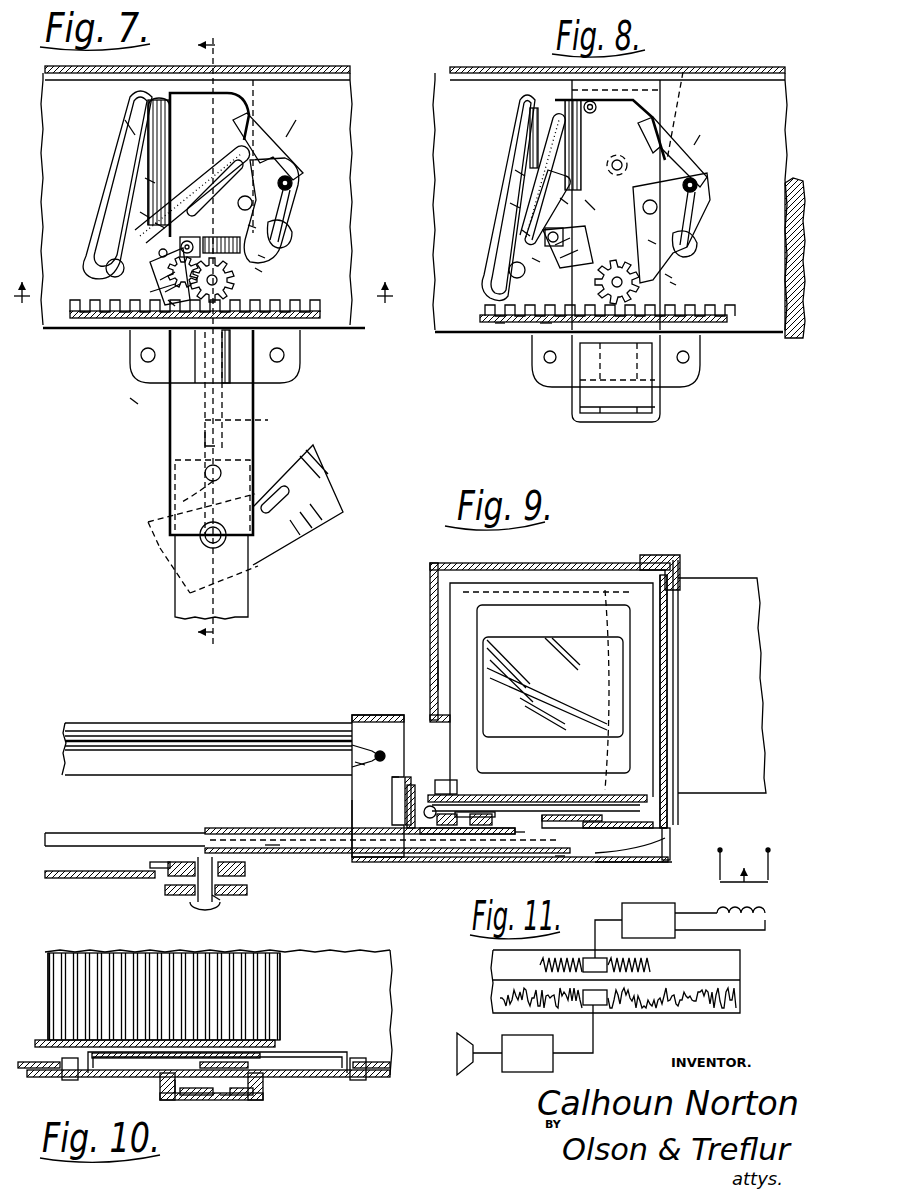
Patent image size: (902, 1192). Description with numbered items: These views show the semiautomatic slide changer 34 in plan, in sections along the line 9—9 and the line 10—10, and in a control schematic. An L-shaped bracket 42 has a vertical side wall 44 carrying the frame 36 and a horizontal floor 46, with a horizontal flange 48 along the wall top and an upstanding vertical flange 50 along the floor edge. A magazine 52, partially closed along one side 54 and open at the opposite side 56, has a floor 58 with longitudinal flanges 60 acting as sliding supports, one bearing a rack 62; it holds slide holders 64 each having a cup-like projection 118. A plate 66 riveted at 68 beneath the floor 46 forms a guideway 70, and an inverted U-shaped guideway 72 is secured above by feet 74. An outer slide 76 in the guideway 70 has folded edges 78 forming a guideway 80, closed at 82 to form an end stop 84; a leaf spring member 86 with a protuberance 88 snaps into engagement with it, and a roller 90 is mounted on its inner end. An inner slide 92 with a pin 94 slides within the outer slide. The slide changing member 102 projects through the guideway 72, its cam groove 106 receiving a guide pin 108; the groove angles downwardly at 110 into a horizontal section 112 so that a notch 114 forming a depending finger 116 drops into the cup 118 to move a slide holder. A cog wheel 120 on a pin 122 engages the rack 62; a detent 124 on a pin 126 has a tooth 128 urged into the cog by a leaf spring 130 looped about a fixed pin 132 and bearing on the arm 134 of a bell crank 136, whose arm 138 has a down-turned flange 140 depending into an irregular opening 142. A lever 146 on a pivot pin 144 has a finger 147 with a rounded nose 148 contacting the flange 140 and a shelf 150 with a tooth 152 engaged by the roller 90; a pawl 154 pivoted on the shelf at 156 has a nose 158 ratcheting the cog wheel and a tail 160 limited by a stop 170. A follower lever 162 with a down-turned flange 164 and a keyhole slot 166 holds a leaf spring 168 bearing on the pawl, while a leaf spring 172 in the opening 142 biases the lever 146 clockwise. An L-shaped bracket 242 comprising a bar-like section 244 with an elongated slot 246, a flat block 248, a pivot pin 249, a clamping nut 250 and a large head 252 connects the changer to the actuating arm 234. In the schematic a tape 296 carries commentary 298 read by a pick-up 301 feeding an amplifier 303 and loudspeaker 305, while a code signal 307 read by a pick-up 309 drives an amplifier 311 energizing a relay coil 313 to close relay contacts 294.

In FIG. 7, the section line 9— 9 is at (224, 339).
In FIG. 7, the section line 10— 10 is at (206, 310).
In FIG. 7, the semiautomatic changer 34 is at (136, 386).
In FIG. 8, the semiautomatic changer 34 is at (504, 353).
In FIG. 9, the frame 36 is at (746, 590).
In FIG. 9, the L-shaped bracket 42 is at (656, 552).
In FIG. 9, the vertical side wall 44 is at (668, 578).
In FIG. 7, the horizontal floor 46 is at (340, 105).
In FIG. 8, the horizontal floor 46 is at (773, 108).
In FIG. 9, the horizontal floor 46 is at (606, 828).
In FIG. 10, the horizontal floor 46 is at (385, 1078).
In FIG. 9, the horizontal flange 48 is at (640, 566).
In FIG. 9, the upstanding vertical flange 50 is at (414, 808).
In FIG. 9, the magazine 52 is at (428, 641).
In FIG. 9, the partially closed side 54 is at (430, 676).
In FIG. 9, the open side 56 is at (657, 660).
In FIG. 9, the magazine floor 58 is at (530, 797).
In FIG. 9, the longitudinal flanges 60 is at (652, 804).
In FIG. 7, the rack 62 is at (290, 302).
In FIG. 8, the rack 62 is at (690, 314).
In FIG. 9, the rack 62 is at (595, 690).
In FIG. 9, the slide holders 64 is at (470, 600).
In FIG. 10, the slide holders 64 is at (205, 953).
In FIG. 7, the plate 66 is at (150, 157).
In FIG. 8, the plate 66 is at (535, 137).
In FIG. 10, the plate 66 is at (295, 1078).
In FIG. 10, the rivets 68 is at (68, 1081).
In FIG. 7, the guideway 70 is at (133, 402).
In FIG. 9, the guideway 70 is at (561, 858).
In FIG. 10, the guideway 70 is at (213, 1101).
In FIG. 7, the inverted U-shaped guideway 72 is at (235, 370).
In FIG. 9, the inverted U-shaped guideway 72 is at (350, 812).
In FIG. 7, the feet 74 is at (298, 358).
In FIG. 8, the feet 74 is at (703, 357).
In FIG. 7, the outer slide 76 is at (242, 448).
In FIG. 9, the outer slide 76 is at (331, 856).
In FIG. 10, the outer slide 76 is at (257, 1101).
In FIG. 7, the folded-over edges 78 is at (254, 419).
In FIG. 10, the folded-over edges 78 is at (190, 1101).
In FIG. 7, the guideway 80 is at (205, 437).
In FIG. 10, the guideway 80 is at (225, 1101).
In FIG. 7, the closed edge portion 82 is at (178, 510).
In FIG. 7, the end stop 84 is at (180, 496).
In FIG. 9, the leaf spring member 86 is at (672, 861).
In FIG. 9, the protuberance 88 is at (672, 843).
In FIG. 7, the roller 90 is at (170, 306).
In FIG. 8, the roller 90 is at (594, 103).
In FIG. 9, the roller 90 is at (520, 835).
In FIG. 7, the inner slide 92 is at (237, 592).
In FIG. 9, the inner slide 92 is at (57, 833).
In FIG. 7, the pin 94 is at (205, 474).
In FIG. 9, the pin 94 is at (273, 848).
In FIG. 9, the slide changing member 102 is at (106, 758).
In FIG. 9, the cam groove 106 is at (186, 745).
In FIG. 9, the guide pin 108 is at (388, 748).
In FIG. 9, the inclined cam section 110 is at (368, 750).
In FIG. 9, the horizontal cam section 112 is at (365, 765).
In FIG. 9, the notch 114 is at (413, 772).
In FIG. 9, the depending finger 116 is at (395, 778).
In FIG. 9, the cup-like projection 118 is at (440, 780).
In FIG. 7, the cog wheel 120 is at (240, 301).
In FIG. 8, the cog wheel 120 is at (648, 271).
In FIG. 9, the cog wheel 120 is at (478, 832).
In FIG. 10, the cog wheel 120 is at (230, 1060).
In FIG. 7, the pin 122 is at (262, 257).
In FIG. 8, the pin 122 is at (672, 284).
In FIG. 7, the detent 124 is at (252, 228).
In FIG. 8, the detent 124 is at (652, 243).
In FIG. 7, the pin 126 is at (255, 196).
In FIG. 8, the pin 126 is at (660, 200).
In FIG. 7, the symmetrical tooth 128 is at (258, 271).
In FIG. 8, the symmetrical tooth 128 is at (668, 276).
In FIG. 7, the leaf spring 130 is at (295, 186).
In FIG. 8, the leaf spring 130 is at (700, 187).
In FIG. 7, the fixed pin 132 is at (288, 187).
In FIG. 8, the fixed pin 132 is at (695, 190).
In FIG. 7, the bell crank arm 134 is at (282, 237).
In FIG. 8, the bell crank arm 134 is at (692, 228).
In FIG. 7, the bell crank 136 is at (287, 138).
In FIG. 8, the bell crank 136 is at (698, 143).
In FIG. 7, the opposite arm 138 is at (262, 122).
In FIG. 8, the opposite arm 138 is at (705, 125).
In FIG. 7, the down-turned flange 140 is at (258, 90).
In FIG. 8, the down-turned flange 140 is at (698, 102).
In FIG. 7, the irregular opening 142 is at (185, 93).
In FIG. 8, the irregular opening 142 is at (672, 92).
In FIG. 7, the pivot pin 144 is at (106, 268).
In FIG. 8, the pivot pin 144 is at (509, 276).
In FIG. 7, the lever 146 is at (150, 181).
In FIG. 8, the lever 146 is at (520, 173).
In FIG. 7, the finger 147 is at (215, 168).
In FIG. 8, the finger 147 is at (555, 125).
In FIG. 7, the rounded nose 148 is at (174, 122).
In FIG. 8, the rounded nose 148 is at (565, 108).
In FIG. 7, the shelf portion 150 is at (122, 326).
In FIG. 8, the shelf portion 150 is at (500, 323).
In FIG. 7, the projecting tooth 152 is at (185, 370).
In FIG. 8, the projecting tooth 152 is at (592, 206).
In FIG. 7, the pawl 154 is at (168, 313).
In FIG. 8, the pawl 154 is at (556, 253).
In FIG. 7, the pawl pivot 156 is at (158, 250).
In FIG. 8, the pawl pivot 156 is at (525, 233).
In FIG. 7, the pawl nose 158 is at (168, 312).
In FIG. 8, the pawl nose 158 is at (585, 251).
In FIG. 7, the tail 160 is at (178, 250).
In FIG. 8, the tail 160 is at (535, 259).
In FIG. 7, the follower lever 162 is at (145, 215).
In FIG. 8, the follower lever 162 is at (515, 207).
In FIG. 7, the down-turned flange 164 is at (166, 100).
In FIG. 8, the down-turned flange 164 is at (583, 155).
In FIG. 7, the keyhole-like slot 166 is at (140, 115).
In FIG. 8, the keyhole-like slot 166 is at (545, 188).
In FIG. 7, the leaf spring 168 is at (160, 226).
In FIG. 8, the leaf spring 168 is at (566, 201).
In FIG. 7, the stop 170 is at (150, 292).
In FIG. 8, the stop 170 is at (545, 324).
In FIG. 7, the leaf spring 172 is at (130, 130).
In FIG. 8, the leaf spring 172 is at (530, 152).
In FIG. 8, the actuating arm 234 is at (797, 332).
In FIG. 9, the L-shaped bracket 242 is at (58, 895).
In FIG. 9, the bar-like section 244 is at (102, 880).
In FIG. 9, the elongated slot 246 is at (200, 862).
In FIG. 9, the flat block 248 is at (190, 901).
In FIG. 7, the pivot pin 249 is at (175, 548).
In FIG. 8, the pivot pin 249 is at (631, 161).
In FIG. 9, the clamping nut 250 is at (157, 868).
In FIG. 9, the large head 252 is at (218, 900).
In FIG. 9, the relay contacts 294 is at (759, 850).
In FIG. 11, the tape 296 is at (748, 969).
In FIG. 11, the recorded commentary 298 is at (630, 1013).
In FIG. 11, the pick-up 301 is at (600, 1006).
In FIG. 11, the amplifier 303 is at (553, 1068).
In FIG. 11, the loudspeaker 305 is at (473, 1037).
In FIG. 11, the code signal 307 is at (585, 958).
In FIG. 11, the pick-up 309 is at (597, 950).
In FIG. 11, the amplifier 311 is at (652, 899).
In FIG. 11, the relay coil 313 is at (753, 931).